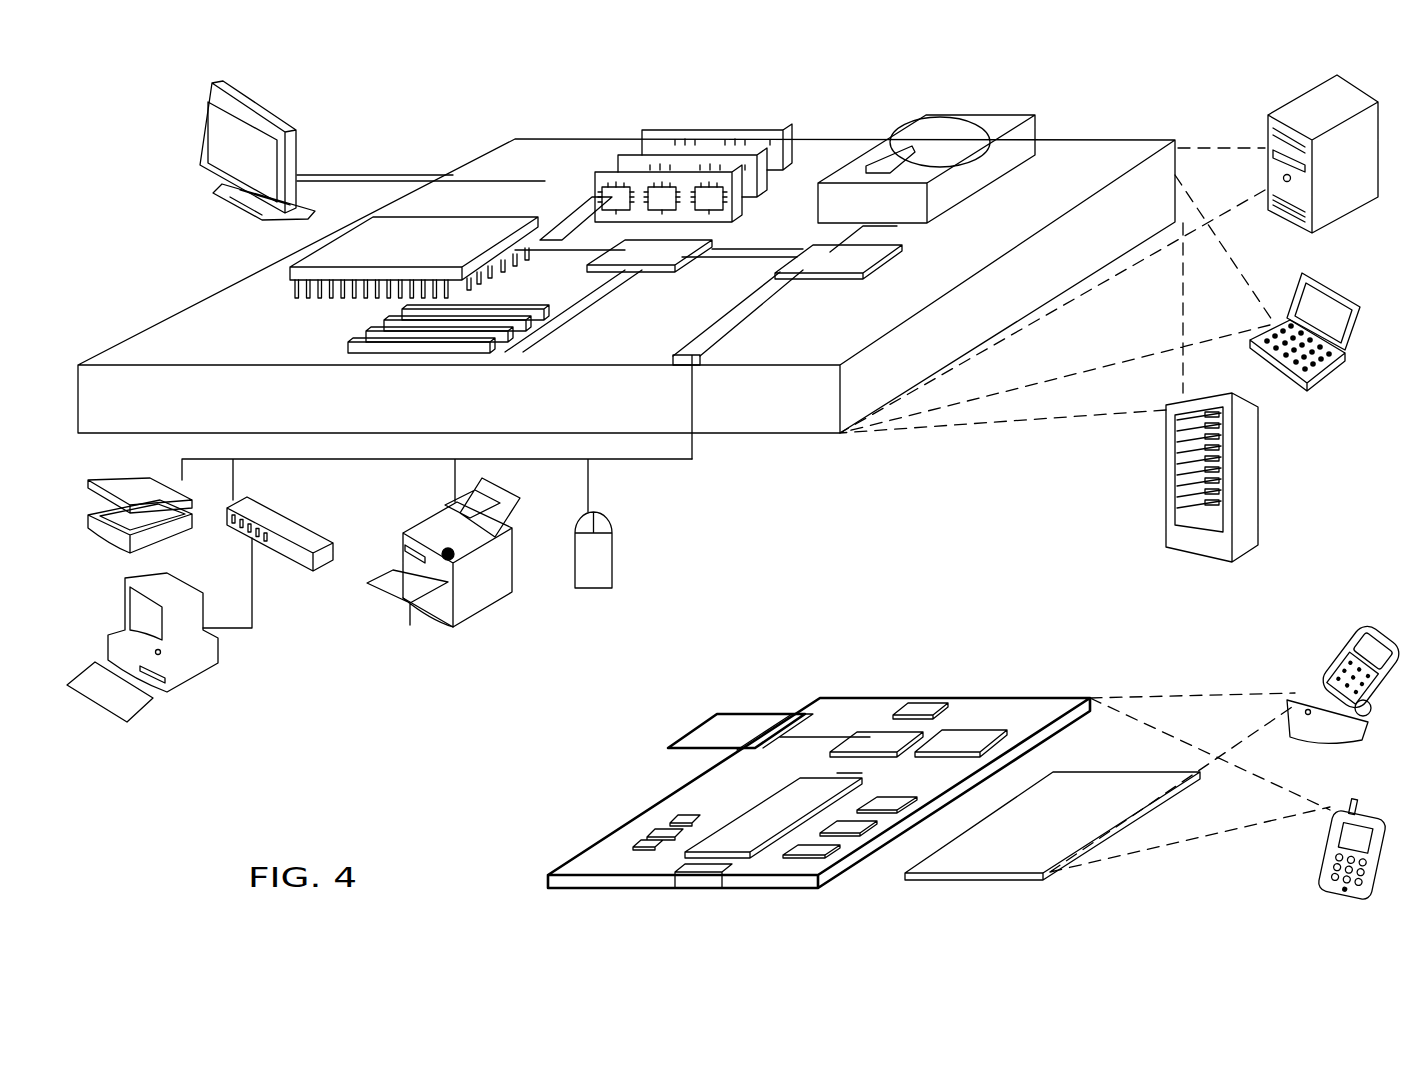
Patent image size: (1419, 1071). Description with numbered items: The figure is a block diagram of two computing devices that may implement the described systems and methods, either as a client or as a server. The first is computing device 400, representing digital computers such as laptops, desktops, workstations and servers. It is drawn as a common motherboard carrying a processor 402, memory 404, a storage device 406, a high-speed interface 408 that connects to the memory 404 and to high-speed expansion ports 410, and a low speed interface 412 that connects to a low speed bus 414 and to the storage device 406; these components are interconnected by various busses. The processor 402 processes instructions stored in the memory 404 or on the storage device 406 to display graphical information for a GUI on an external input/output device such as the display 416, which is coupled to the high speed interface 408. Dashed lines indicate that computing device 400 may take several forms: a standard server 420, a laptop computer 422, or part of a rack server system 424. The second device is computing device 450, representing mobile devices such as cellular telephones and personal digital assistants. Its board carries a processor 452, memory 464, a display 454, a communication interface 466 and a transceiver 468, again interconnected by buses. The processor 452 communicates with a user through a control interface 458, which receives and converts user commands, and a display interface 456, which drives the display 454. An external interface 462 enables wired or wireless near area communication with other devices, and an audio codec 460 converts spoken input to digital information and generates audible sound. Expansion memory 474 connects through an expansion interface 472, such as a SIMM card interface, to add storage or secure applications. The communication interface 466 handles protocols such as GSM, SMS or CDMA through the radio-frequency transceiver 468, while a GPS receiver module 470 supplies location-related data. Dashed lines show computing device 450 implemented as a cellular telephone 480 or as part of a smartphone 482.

The computing device 400 is at (421, 112).
The processor 402 is at (248, 278).
The memory 404 is at (655, 130).
The storage device 406 is at (926, 118).
The high-speed interface 408 is at (623, 253).
The high-speed expansion ports 410 is at (370, 327).
The low speed interface 412 is at (838, 257).
The low speed bus 414 is at (700, 366).
The display 416 is at (204, 92).
The standard server 420 is at (1268, 125).
The laptop computer 422 is at (1302, 273).
The rack server system 424 is at (1166, 505).
The computing device 450 is at (798, 673).
The processor 452 is at (738, 888).
The display 454 is at (1043, 875).
The display interface 456 is at (833, 866).
The control interface 458 is at (875, 836).
The audio codec 460 is at (885, 812).
The external interface 462 is at (705, 878).
The memory 464 is at (636, 830).
The communication interface 466 is at (878, 740).
The transceiver 468 is at (965, 740).
The GPS receiver module 470 is at (938, 700).
The expansion interface 472 is at (792, 710).
The expansion memory 474 is at (712, 713).
The cellular telephone 480 is at (1350, 632).
The smartphone 482 is at (1333, 790).